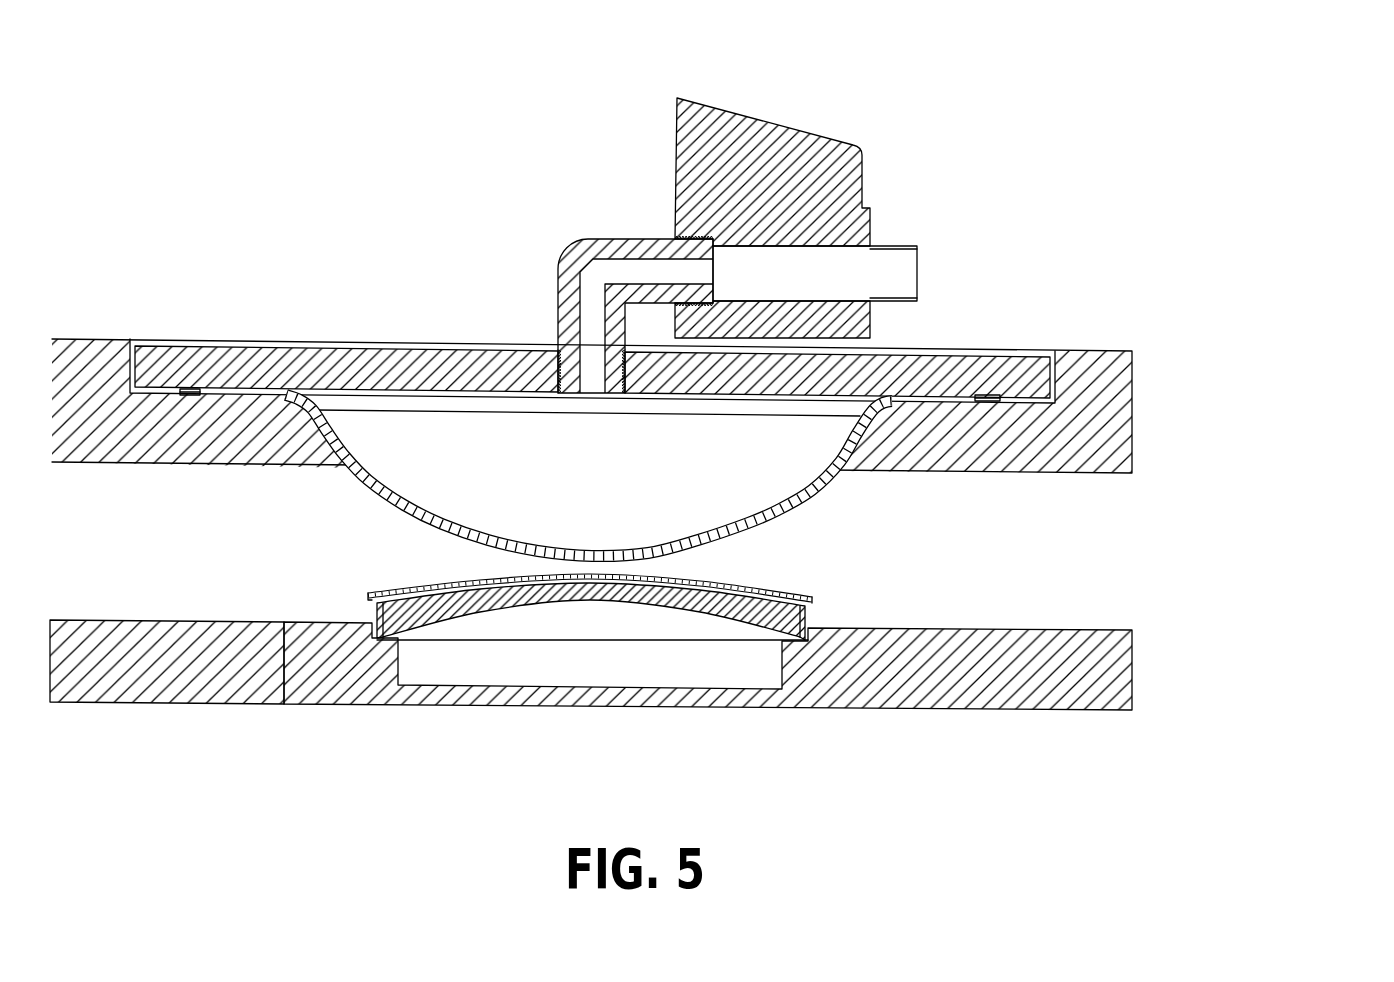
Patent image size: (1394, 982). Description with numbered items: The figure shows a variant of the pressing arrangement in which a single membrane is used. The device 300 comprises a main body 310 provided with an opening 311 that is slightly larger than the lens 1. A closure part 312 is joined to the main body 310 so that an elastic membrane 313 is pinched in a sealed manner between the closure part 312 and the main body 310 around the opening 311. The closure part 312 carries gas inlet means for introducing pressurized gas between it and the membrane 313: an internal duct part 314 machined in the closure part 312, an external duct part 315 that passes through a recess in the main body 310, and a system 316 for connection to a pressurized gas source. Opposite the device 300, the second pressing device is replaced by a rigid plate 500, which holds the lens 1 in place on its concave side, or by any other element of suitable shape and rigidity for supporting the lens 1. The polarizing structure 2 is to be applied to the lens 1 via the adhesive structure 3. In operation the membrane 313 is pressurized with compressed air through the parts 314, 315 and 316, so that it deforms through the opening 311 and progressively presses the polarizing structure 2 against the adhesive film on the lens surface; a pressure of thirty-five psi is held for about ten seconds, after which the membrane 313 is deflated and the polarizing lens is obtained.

The pressing device 300 is at (1168, 348).
The main body 310 is at (80, 358).
The opening 311 is at (550, 470).
The closure part 312 is at (315, 362).
The elastic membrane 313 is at (410, 495).
The internal duct part 314 is at (625, 270).
The external duct part 315 is at (738, 137).
The connection system 316 is at (842, 265).
The rigid plate 500 is at (1168, 597).
The lens 1 is at (769, 632).
The polarizing structure 2 is at (797, 610).
The adhesive structure 3 is at (372, 605).